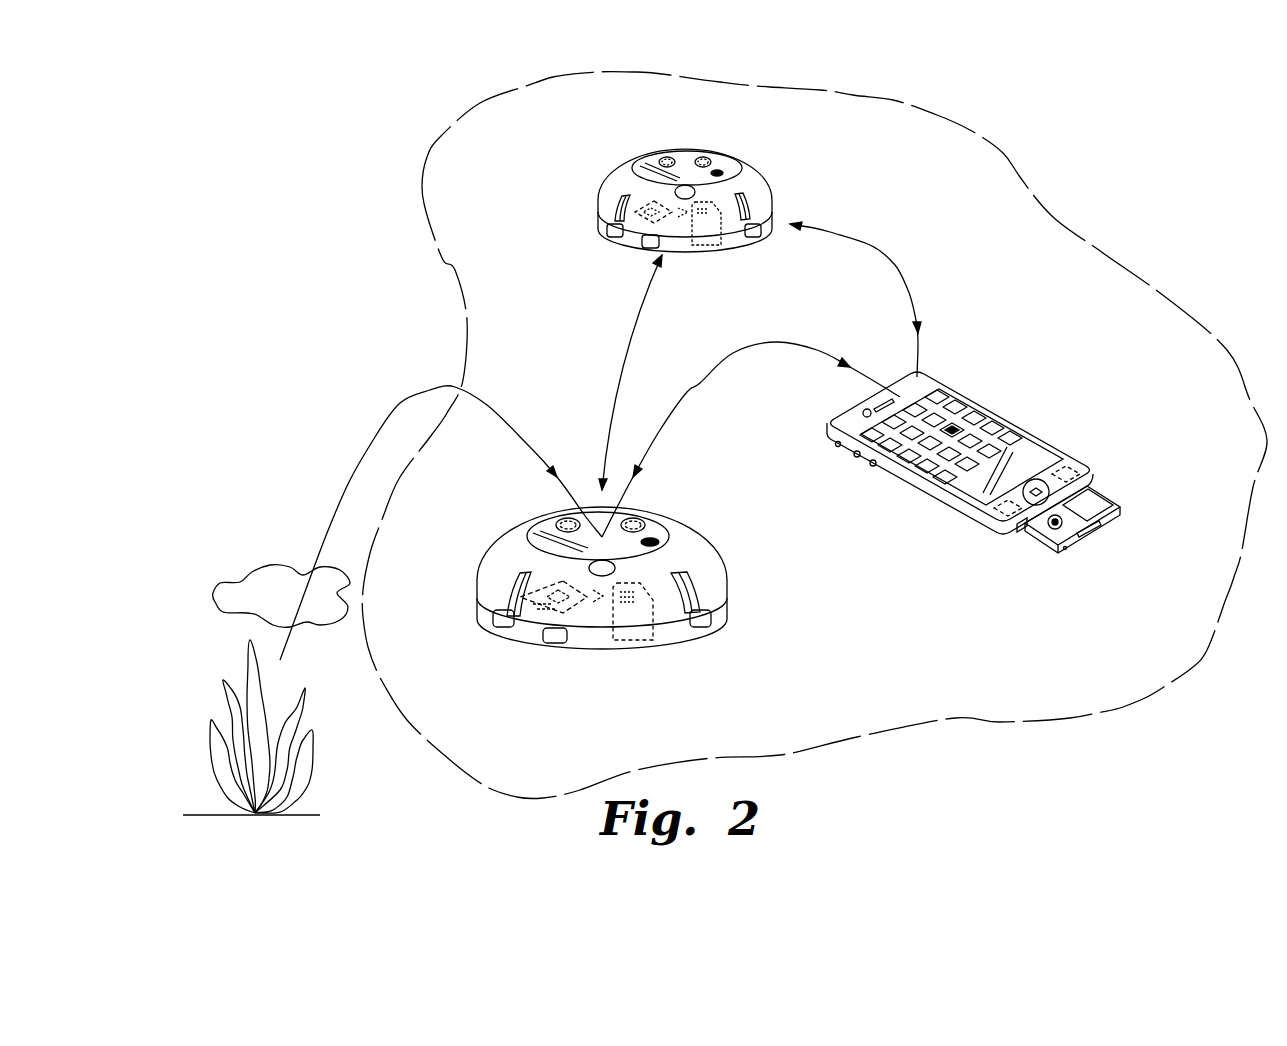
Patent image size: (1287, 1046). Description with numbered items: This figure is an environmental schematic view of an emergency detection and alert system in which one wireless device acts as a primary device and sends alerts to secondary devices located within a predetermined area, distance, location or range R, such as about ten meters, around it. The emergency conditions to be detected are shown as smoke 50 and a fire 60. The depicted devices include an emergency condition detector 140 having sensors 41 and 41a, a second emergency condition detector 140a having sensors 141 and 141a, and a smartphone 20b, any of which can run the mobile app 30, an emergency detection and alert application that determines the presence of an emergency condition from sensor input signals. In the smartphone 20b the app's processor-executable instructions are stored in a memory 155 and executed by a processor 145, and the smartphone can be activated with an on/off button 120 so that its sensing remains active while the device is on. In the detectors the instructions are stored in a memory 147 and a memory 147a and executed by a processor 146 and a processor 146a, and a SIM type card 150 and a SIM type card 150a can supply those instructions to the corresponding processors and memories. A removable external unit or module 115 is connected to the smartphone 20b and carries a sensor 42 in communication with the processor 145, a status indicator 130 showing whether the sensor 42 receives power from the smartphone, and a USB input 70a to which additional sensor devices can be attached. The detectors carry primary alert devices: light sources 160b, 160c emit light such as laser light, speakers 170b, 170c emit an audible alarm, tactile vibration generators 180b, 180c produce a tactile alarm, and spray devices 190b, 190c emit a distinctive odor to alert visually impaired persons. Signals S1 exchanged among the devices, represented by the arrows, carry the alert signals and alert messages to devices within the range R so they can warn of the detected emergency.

The smartphone 20b is at (1003, 453).
The mobile app 30 is at (958, 425).
The sensor 41 is at (637, 518).
The sensor 41a is at (567, 518).
The sensor 42 is at (1020, 530).
The smoke 50 is at (267, 565).
The fire 60 is at (327, 765).
The USB input 70a is at (1103, 529).
The removable external unit or module 115 is at (1110, 482).
The on/off button 120 is at (1037, 480).
The status indicator 130 is at (1103, 490).
The emergency condition detector 140 is at (612, 605).
The emergency condition detector 140a is at (710, 209).
The sensor 141 is at (703, 143).
The sensor 141a is at (667, 143).
The processor 145 is at (990, 515).
The processor 146 is at (553, 583).
The processor 146a is at (647, 202).
The memory 147 is at (512, 578).
The memory 147a is at (647, 222).
The SIM type card 150 is at (637, 632).
The SIM type card 150a is at (703, 238).
The memory 155 is at (1083, 458).
The light source 160b is at (557, 637).
The light source 160c is at (648, 246).
The speaker 170b is at (658, 540).
The speaker 170c is at (712, 176).
The tactile vibration generator 180b is at (707, 622).
The tactile vibration generator 180c is at (758, 233).
The spray device 190b is at (502, 622).
The spray device 190c is at (608, 232).
The predetermined range R is at (955, 718).
The signals S1,S2 S1 is at (687, 392).